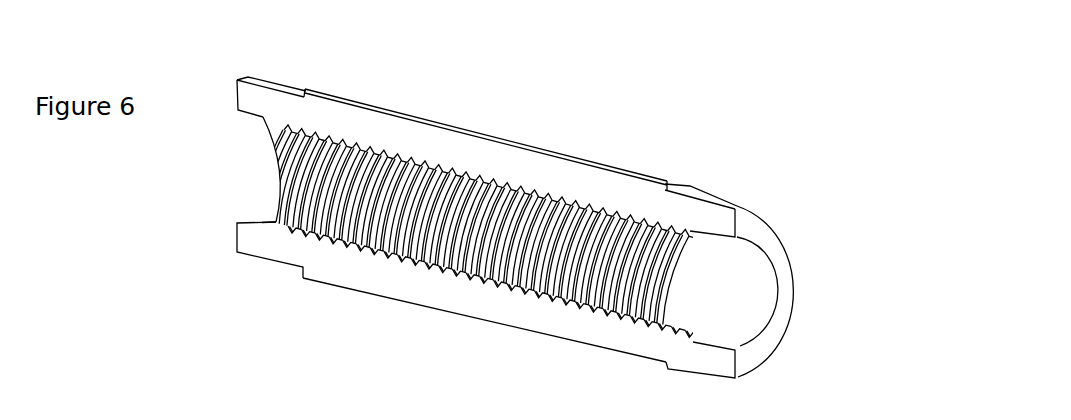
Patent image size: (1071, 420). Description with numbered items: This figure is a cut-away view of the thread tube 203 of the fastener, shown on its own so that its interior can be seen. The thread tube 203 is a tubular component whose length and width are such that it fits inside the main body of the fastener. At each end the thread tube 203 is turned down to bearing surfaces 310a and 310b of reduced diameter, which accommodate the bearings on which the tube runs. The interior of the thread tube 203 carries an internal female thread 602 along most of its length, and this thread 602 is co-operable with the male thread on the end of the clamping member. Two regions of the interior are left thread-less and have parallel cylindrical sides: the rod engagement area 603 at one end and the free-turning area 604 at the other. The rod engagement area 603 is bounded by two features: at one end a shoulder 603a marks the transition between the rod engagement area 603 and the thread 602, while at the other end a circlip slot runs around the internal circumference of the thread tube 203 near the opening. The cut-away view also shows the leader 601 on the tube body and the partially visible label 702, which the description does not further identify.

The sleeve 601 is at (518, 131).
The internal female thread 602 is at (599, 308).
The rod engagement area 603 is at (268, 204).
The shoulder 603a is at (271, 233).
The free-turning area 604 is at (757, 318).
The bearing surface 310a is at (287, 74).
The bearing surface 310b is at (744, 193).
The thread tube 203 is at (391, 349).
The housing 702 is at (326, 415).